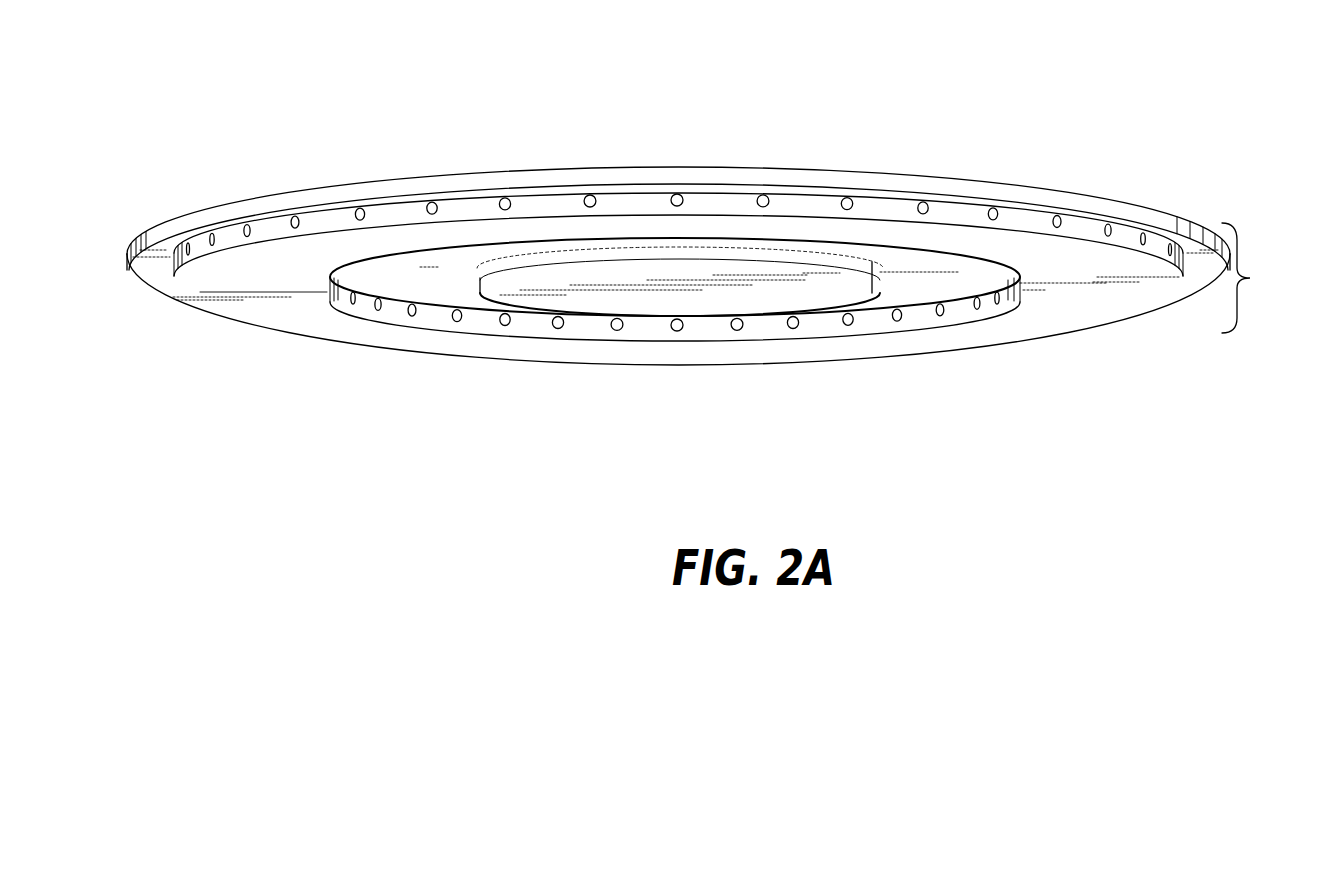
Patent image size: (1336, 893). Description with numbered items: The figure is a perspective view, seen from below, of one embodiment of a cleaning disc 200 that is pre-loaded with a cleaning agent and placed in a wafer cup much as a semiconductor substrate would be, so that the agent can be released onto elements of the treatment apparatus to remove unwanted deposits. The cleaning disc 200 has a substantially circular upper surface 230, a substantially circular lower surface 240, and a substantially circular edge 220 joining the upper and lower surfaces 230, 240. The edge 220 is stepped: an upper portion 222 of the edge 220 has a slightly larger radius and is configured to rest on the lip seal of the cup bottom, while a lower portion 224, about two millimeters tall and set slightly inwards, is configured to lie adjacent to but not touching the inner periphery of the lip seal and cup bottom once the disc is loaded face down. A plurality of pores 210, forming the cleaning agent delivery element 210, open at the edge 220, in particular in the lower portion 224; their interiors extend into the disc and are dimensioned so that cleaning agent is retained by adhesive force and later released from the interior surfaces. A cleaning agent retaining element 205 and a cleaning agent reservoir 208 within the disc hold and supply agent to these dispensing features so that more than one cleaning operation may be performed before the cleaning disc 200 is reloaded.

The cleaning disc 200 is at (768, 167).
The cleaning agent retaining element 205 is at (1063, 297).
The cleaning agent reservoir 208 is at (920, 285).
The pores 210 is at (1000, 207).
The circular edge 220 is at (1276, 278).
The upper portion of the edge 222 is at (1178, 221).
The lower portion of the edge 224 is at (1182, 281).
The upper surface 230 is at (283, 193).
The lower surface 240 is at (290, 313).